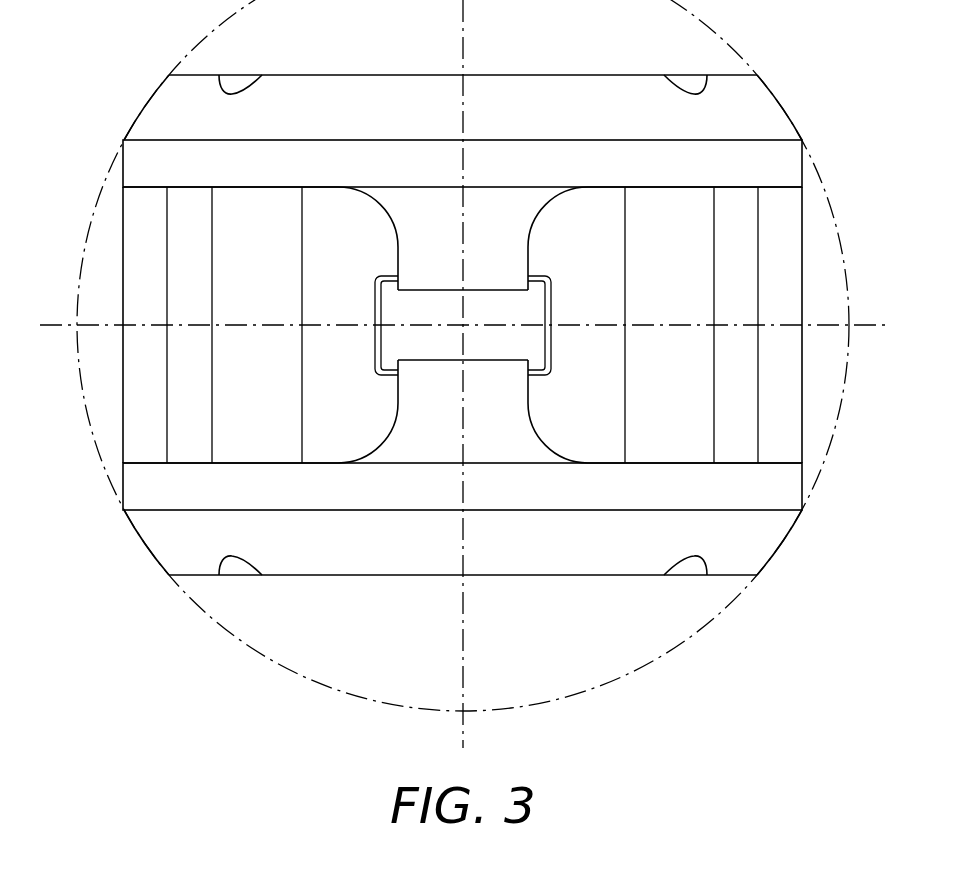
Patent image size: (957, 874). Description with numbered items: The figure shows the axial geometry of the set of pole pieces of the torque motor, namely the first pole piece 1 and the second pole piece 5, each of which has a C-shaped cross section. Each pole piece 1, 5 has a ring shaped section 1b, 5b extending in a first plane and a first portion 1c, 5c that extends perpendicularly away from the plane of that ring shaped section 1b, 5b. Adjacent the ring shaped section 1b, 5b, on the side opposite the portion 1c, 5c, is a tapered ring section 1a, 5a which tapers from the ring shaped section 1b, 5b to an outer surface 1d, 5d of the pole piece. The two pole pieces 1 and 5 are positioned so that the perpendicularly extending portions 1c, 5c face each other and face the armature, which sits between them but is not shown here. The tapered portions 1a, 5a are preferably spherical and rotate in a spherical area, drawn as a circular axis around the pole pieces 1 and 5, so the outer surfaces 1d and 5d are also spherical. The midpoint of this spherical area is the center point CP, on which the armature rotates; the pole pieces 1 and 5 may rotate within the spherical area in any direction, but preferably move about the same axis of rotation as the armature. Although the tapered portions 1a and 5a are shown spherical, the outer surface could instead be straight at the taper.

The first pole piece 1 is at (523, 481).
The tapered ring section 1a is at (762, 540).
The ring shaped section 1b is at (790, 485).
The first portion 1c is at (520, 403).
The outer surface 1d is at (596, 575).
The second pole piece 5 is at (403, 167).
The tapered ring section 5a is at (166, 109).
The ring shaped section 5b is at (136, 165).
The first portion 5c is at (402, 246).
The outer surface 5d is at (326, 75).
The center point CP is at (464, 324).